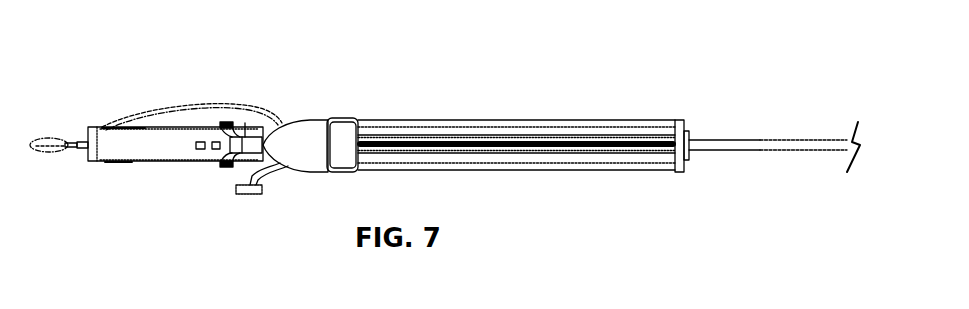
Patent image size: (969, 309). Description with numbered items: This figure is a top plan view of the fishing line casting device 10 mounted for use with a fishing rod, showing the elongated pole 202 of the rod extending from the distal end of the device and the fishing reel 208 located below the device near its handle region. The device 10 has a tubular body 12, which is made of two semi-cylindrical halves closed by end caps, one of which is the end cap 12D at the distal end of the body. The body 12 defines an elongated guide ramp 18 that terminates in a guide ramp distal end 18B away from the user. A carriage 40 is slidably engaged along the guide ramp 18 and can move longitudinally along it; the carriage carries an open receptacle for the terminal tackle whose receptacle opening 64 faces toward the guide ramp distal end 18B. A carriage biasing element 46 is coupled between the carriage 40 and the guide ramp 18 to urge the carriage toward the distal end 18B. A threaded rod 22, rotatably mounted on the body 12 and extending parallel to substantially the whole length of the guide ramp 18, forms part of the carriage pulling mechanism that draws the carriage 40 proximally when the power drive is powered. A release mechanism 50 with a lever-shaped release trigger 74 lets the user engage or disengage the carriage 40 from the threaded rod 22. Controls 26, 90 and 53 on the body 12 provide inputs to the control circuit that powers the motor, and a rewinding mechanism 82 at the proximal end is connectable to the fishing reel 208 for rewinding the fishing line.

The fishing line casting device 10 is at (669, 57).
The body 12 is at (137, 164).
The end cap 12D is at (688, 151).
The guide ramp 18 is at (522, 132).
The guide ramp distal end 18B is at (678, 143).
The threaded rod 22 is at (650, 149).
The control 26 is at (200, 141).
The carriage 40 is at (315, 118).
The carriage biasing element 46 is at (584, 121).
The release mechanism 50 is at (228, 121).
The control 53 is at (226, 168).
The receptacle opening 64 is at (341, 136).
The release trigger 74 is at (247, 139).
The rewinding mechanism 82 is at (66, 150).
The control 90 is at (216, 141).
The elongated pole 202 is at (771, 142).
The fishing reel 208 is at (243, 195).